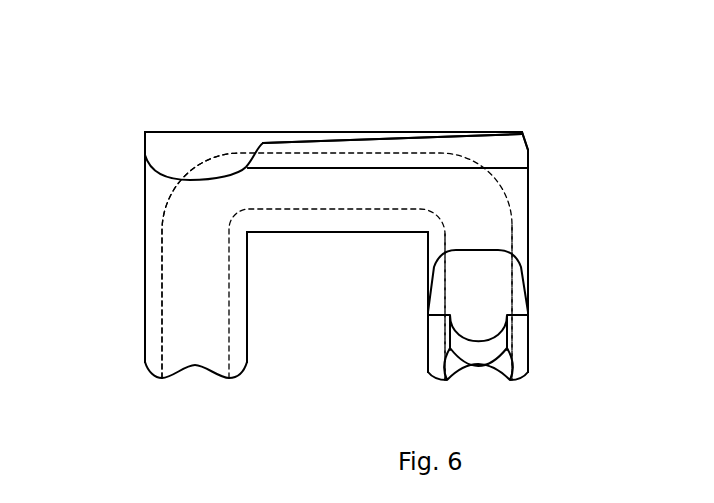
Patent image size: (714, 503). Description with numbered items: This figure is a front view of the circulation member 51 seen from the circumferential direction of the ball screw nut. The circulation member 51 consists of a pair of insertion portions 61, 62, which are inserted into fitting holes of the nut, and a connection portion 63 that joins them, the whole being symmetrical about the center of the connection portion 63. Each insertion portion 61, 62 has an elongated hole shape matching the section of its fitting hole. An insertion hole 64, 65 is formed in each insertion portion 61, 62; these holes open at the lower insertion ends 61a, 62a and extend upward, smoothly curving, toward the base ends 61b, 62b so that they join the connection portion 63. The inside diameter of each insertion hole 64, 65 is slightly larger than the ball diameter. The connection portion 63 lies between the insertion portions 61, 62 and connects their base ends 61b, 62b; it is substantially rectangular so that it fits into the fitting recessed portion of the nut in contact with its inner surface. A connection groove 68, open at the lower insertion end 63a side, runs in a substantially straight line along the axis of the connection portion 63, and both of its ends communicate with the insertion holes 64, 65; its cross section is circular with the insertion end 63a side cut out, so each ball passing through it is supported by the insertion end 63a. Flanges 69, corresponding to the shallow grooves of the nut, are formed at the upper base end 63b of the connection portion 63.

The circulation member 51 is at (107, 62).
The insertion portion 61 is at (428, 328).
The insertion end 61a is at (522, 364).
The base end 61b is at (528, 174).
The insertion portion 62 is at (247, 358).
The insertion end 62a is at (145, 362).
The base end 62b is at (148, 178).
The connection portion 63 is at (332, 132).
The insertion end 63a is at (330, 232).
The base end 63b is at (300, 143).
The insertion hole 64 is at (508, 276).
The insertion hole 65 is at (172, 287).
The connection groove 68 is at (406, 152).
The flange 69 is at (505, 133).